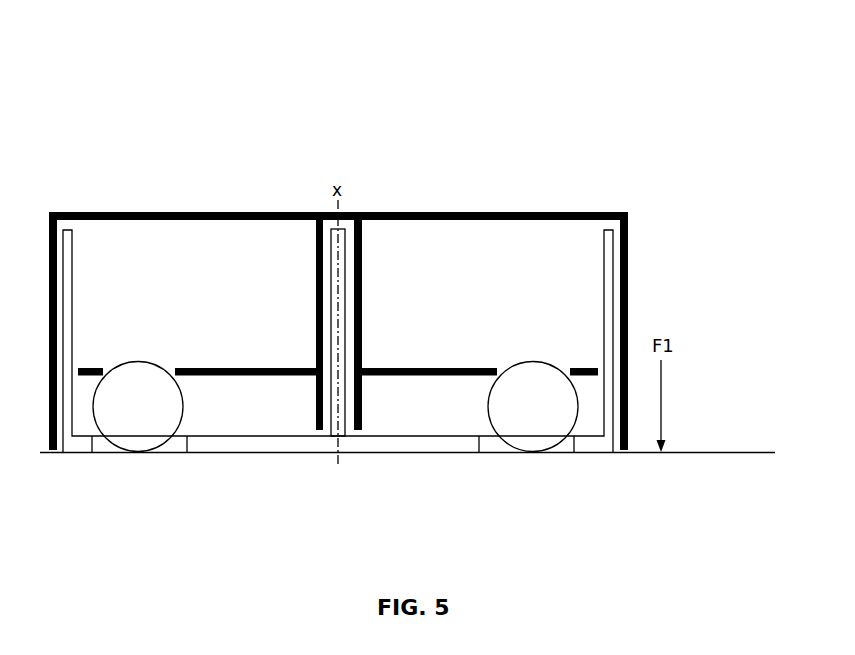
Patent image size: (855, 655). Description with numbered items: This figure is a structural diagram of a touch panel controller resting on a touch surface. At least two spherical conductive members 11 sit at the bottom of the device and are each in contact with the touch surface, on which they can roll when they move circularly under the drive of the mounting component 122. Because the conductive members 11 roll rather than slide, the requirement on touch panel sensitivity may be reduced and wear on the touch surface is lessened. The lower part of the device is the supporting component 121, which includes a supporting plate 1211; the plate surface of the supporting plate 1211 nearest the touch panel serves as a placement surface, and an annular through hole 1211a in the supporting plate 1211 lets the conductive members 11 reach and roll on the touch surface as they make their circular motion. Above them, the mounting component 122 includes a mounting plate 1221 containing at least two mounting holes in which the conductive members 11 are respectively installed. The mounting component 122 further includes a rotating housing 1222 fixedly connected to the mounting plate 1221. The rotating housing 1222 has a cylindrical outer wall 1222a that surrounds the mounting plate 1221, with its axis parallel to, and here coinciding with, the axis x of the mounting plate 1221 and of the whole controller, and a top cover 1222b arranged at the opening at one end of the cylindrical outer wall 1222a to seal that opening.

The conductive member 11 is at (136, 443).
The supporting component 121 is at (338, 400).
The supporting plate 1211 is at (258, 460).
The annular through hole 1211a is at (177, 460).
The mounting component 122 is at (405, 233).
The mounting plate 1221 is at (437, 358).
The rotating housing 1222 is at (405, 280).
The cylindrical outer wall 1222a is at (638, 246).
The top cover 1222b is at (715, 128).